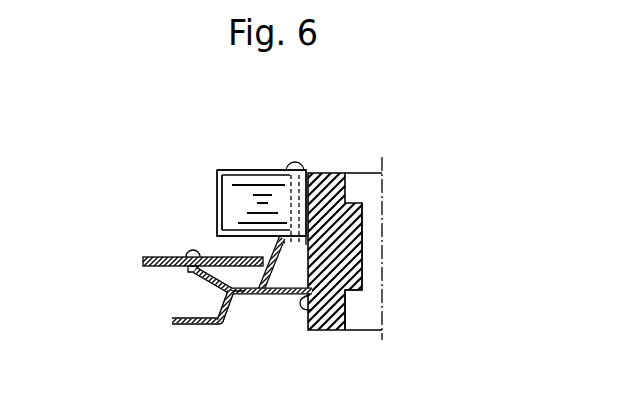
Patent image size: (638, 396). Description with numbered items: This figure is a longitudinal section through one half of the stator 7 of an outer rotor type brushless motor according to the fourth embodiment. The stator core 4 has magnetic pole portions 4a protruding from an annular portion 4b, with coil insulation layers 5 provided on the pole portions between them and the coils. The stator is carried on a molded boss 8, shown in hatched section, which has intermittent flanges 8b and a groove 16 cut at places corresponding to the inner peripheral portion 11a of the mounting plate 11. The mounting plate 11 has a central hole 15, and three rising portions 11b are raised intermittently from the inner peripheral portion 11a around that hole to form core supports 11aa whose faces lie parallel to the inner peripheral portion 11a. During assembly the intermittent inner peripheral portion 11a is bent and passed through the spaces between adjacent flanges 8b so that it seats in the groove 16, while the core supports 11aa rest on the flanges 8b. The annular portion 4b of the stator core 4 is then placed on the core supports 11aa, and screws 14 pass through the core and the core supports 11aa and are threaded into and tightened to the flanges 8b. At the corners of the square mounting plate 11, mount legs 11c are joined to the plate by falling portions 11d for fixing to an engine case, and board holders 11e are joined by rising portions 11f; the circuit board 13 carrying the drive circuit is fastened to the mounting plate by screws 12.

The stator core 4 is at (250, 188).
The magnetic pole portions 4a is at (232, 172).
The annular portion 4b is at (278, 170).
The coil insulation layers 5 is at (258, 170).
The stator 7 is at (212, 190).
The boss 8 is at (342, 218).
The intermittent flanges 8b is at (363, 250).
The mounting plate 11 is at (267, 306).
The inner peripheral portion 11a is at (294, 299).
The core supports 11aa is at (285, 243).
The rising portions 11b is at (262, 262).
The mount legs 11c is at (187, 327).
The falling portions 11d is at (233, 325).
The board holders 11e is at (207, 279).
The rising portions 11f is at (222, 299).
The screws 12 is at (192, 252).
The circuit board 13 is at (142, 260).
The screws 14 is at (298, 163).
The hole 15 is at (363, 282).
The groove 16 is at (346, 315).